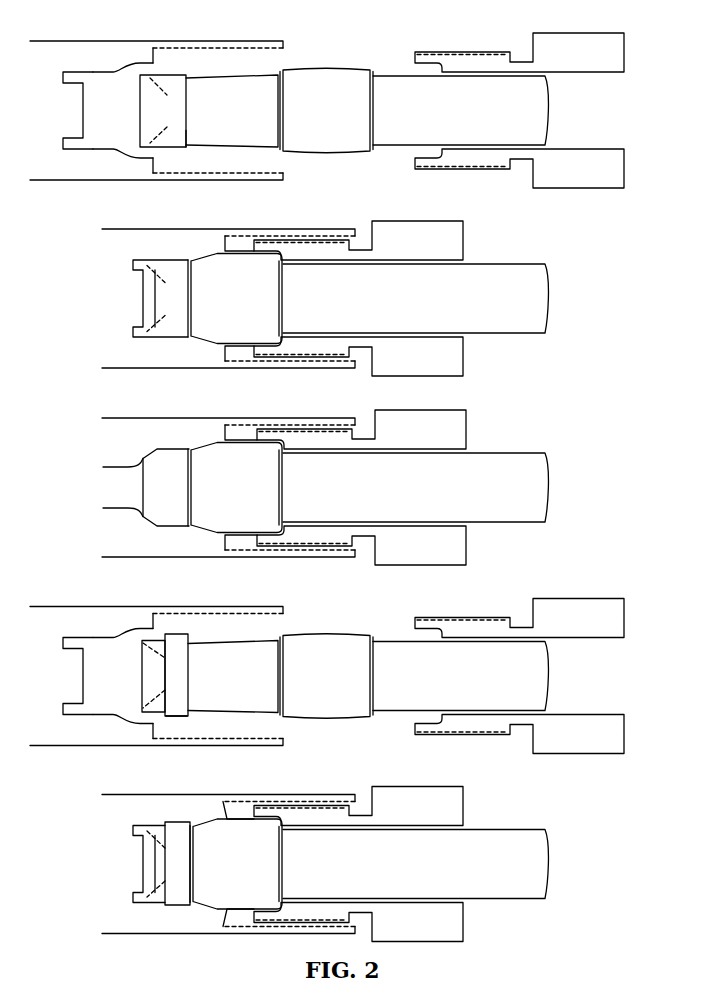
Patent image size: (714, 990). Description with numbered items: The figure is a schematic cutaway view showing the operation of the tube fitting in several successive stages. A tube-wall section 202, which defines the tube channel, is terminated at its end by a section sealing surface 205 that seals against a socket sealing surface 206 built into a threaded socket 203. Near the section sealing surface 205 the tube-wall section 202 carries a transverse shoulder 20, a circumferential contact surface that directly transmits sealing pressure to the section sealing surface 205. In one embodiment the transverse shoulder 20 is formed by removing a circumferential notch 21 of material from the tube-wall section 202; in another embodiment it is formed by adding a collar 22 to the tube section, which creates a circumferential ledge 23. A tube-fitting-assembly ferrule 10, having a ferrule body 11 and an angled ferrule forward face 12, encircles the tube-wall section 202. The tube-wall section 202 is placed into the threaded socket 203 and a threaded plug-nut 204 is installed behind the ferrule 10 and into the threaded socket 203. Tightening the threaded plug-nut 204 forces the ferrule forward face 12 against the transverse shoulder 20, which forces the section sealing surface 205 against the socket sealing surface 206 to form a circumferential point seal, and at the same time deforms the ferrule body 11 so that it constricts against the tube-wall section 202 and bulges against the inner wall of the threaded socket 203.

The tube-fitting-assembly ferrule 10 is at (323, 320).
The ferrule body 11 is at (285, 478).
The ferrule forward face 12 is at (234, 384).
The transverse shoulder 20 is at (182, 383).
The circumferential notch 21 is at (204, 149).
The collar 22 is at (182, 724).
The circumferential ledge 23 is at (197, 769).
The tube-wall section 202 is at (435, 487).
The threaded socket 203 is at (192, 478).
The threaded plug-nut 204 is at (439, 477).
The section sealing surface 205 is at (127, 482).
The socket sealing surface 206 is at (104, 487).